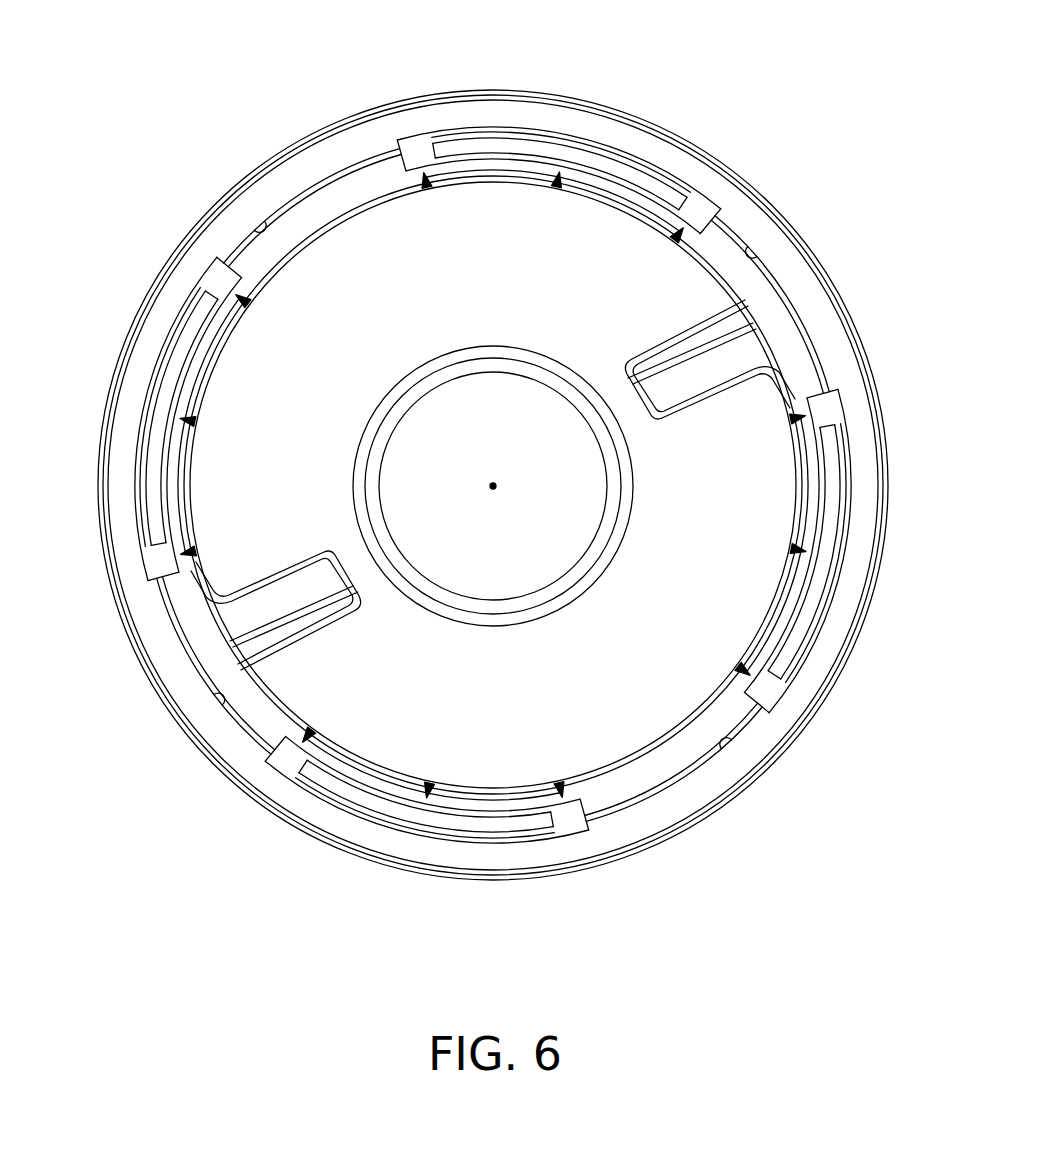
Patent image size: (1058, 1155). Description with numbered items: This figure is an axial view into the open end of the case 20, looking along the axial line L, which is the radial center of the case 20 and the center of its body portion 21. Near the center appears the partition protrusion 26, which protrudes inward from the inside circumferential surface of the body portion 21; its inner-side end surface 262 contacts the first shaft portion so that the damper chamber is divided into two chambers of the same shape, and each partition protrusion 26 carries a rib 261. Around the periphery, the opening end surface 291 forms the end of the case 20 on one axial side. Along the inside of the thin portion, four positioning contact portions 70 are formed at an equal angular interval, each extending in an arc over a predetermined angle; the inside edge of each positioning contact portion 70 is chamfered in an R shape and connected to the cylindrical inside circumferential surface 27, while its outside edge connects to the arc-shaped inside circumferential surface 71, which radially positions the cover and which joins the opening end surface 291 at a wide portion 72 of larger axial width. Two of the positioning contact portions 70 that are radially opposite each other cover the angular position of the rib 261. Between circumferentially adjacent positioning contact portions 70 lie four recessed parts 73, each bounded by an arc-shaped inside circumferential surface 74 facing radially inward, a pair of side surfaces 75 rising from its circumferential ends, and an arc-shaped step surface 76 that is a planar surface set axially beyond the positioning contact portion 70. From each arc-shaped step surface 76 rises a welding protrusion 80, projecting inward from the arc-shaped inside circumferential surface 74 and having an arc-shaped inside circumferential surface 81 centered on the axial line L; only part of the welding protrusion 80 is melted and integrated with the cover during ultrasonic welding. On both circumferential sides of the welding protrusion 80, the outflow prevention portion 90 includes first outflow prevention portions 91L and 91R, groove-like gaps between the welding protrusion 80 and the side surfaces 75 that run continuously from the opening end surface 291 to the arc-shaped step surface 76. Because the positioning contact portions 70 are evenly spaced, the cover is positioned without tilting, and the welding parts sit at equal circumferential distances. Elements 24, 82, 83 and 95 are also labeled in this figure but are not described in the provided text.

The case 20 is at (478, 463).
The body portion 21 is at (143, 134).
The opening end surface 291 is at (690, 160).
The hub / bearing portion 24 is at (392, 450).
The partition protrusion 26 is at (493, 485).
The rib 261 is at (640, 368).
The inner-side end surface 262 is at (652, 412).
The cylindrical inside circumferential surface 27 is at (655, 735).
The positioning contact portion 70 is at (499, 465).
The arc-shaped inside circumferential surface 71 is at (262, 228).
The wide portion 72 is at (326, 170).
The recessed part 73 is at (494, 493).
The arc-shaped inside circumferential surface 74 is at (494, 493).
The side surface 75 is at (410, 140).
The arc-shaped step surface 76 is at (470, 182).
The inner ring base 95 is at (493, 488).
The welding protrusion 80 is at (493, 485).
The arc-shaped inside circumferential surface 81 is at (556, 185).
The outer plate portion 82 is at (540, 150).
The inner plate portion 83 is at (572, 153).
The outflow prevention portion 90 is at (493, 485).
The first outflow prevention portion 91L is at (428, 185).
The first outflow prevention portion 91R is at (676, 238).
The axial line L is at (497, 489).